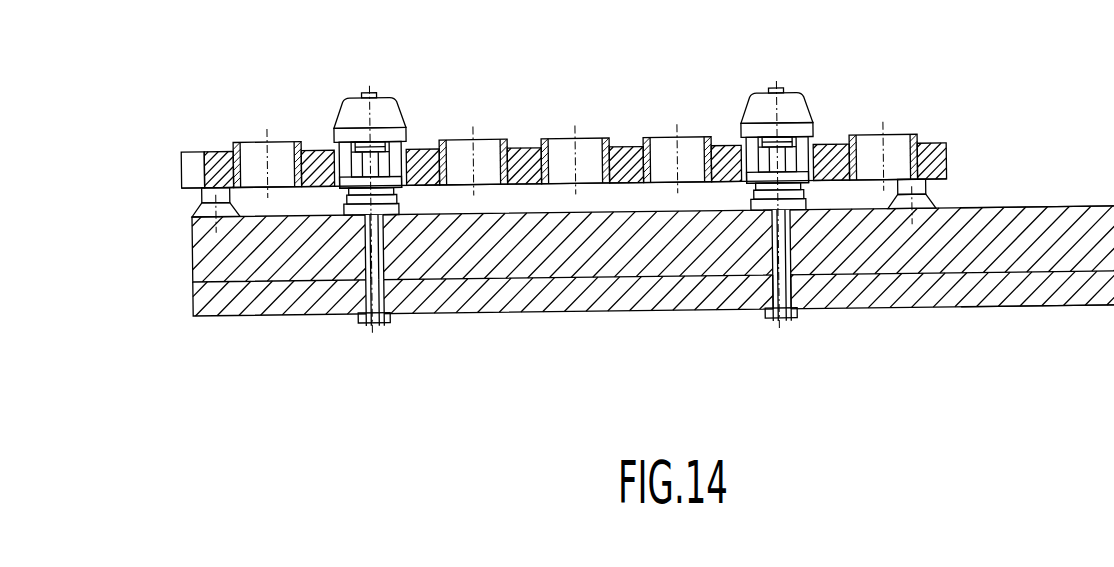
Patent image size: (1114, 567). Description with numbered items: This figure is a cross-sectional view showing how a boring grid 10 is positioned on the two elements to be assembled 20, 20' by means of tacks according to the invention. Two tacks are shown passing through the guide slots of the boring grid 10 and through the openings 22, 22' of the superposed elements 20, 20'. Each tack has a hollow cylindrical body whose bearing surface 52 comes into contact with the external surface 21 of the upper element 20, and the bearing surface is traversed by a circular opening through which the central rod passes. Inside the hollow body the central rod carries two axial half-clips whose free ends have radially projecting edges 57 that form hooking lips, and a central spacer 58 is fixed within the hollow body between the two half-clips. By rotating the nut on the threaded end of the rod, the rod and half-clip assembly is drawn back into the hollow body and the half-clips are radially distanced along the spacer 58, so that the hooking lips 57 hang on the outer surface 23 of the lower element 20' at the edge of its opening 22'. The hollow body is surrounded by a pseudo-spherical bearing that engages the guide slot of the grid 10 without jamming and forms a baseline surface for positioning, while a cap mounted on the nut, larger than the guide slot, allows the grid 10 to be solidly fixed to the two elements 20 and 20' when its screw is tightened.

The boring grid 10 is at (949, 153).
The element to be assembled 20 is at (652, 211).
The element to be assembled 20' is at (653, 325).
The external surface 21 is at (1000, 207).
The opening 22 is at (330, 296).
The opening 22' is at (403, 294).
The outer surface 23 is at (997, 317).
The bearing surface 52 is at (762, 219).
The edges 57 is at (353, 330).
The central spacer 58 is at (780, 292).